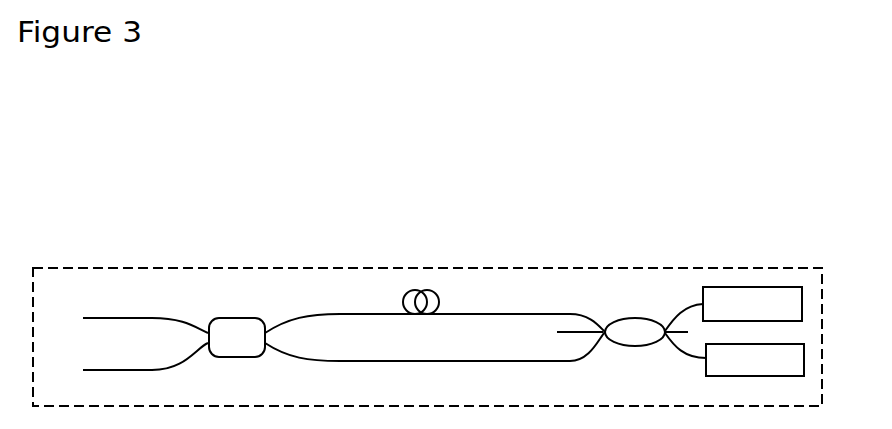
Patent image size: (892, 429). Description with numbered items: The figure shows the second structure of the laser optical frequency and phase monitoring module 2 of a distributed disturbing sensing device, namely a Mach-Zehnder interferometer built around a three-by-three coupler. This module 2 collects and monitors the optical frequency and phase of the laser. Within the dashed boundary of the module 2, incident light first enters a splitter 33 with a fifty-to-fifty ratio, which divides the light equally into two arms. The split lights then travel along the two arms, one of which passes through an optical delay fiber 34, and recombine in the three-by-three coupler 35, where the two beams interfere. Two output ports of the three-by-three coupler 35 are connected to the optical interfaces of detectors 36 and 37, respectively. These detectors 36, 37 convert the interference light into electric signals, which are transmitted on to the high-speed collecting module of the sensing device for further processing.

The laser optical frequency and phase monitoring module 2 is at (476, 262).
The splitter 33 is at (237, 337).
The optical delay fiber 34 is at (439, 302).
The 3×3 coupler 35 is at (635, 332).
The detector 36 is at (752, 304).
The detector 37 is at (755, 360).